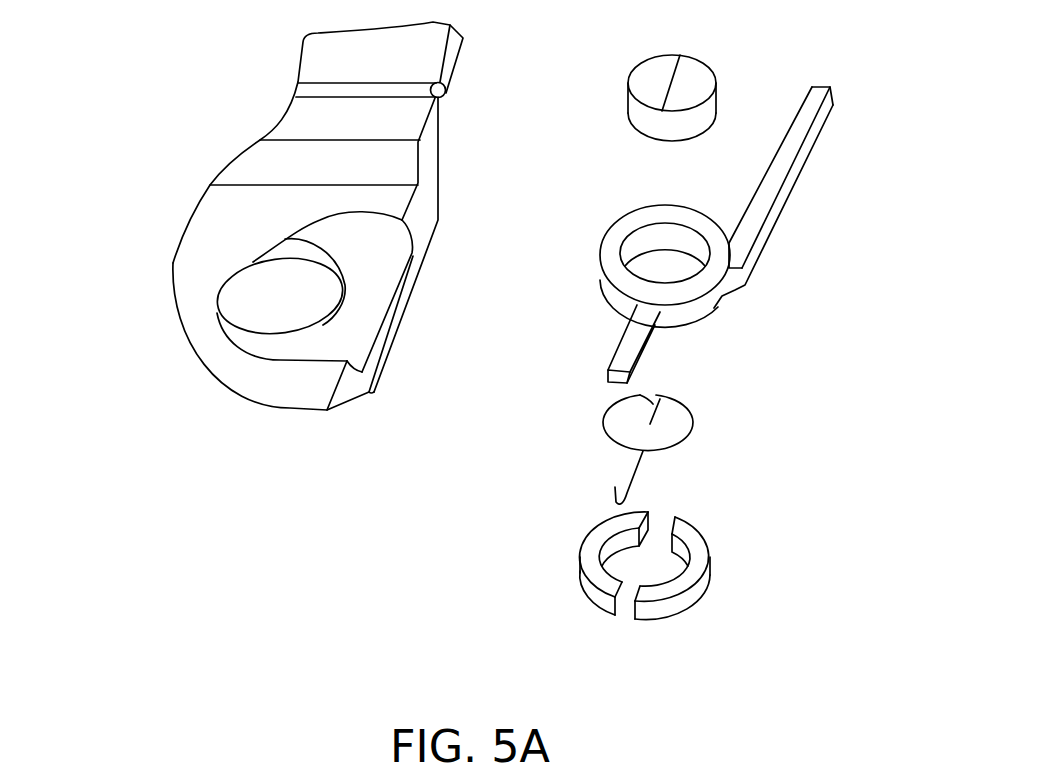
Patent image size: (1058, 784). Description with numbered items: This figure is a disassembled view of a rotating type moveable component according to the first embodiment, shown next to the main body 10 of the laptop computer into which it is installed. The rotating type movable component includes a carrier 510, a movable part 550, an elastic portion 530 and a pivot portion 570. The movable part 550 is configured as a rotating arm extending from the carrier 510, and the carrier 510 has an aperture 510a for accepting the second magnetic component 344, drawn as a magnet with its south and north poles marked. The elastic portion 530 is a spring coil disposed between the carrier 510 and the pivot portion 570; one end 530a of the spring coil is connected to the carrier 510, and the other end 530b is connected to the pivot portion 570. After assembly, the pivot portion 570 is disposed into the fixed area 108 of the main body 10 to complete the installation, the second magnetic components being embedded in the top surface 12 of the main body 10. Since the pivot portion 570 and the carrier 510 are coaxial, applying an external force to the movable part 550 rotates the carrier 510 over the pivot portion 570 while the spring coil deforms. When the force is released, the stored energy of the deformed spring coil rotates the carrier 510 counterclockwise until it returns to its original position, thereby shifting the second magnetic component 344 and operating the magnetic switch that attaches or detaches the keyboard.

The main body 10 is at (442, 152).
The top surface 12 is at (280, 383).
The fixed area 108 is at (287, 297).
The second magnetic component 344 is at (718, 82).
The carrier 510 is at (635, 290).
The aperture 510a is at (657, 268).
The elastic portion 530 is at (657, 445).
The one end of the spring coil 530a is at (659, 400).
The other end of the spring coil 530b is at (632, 490).
The movable part 550 is at (802, 172).
The pivot portion 570 is at (580, 549).